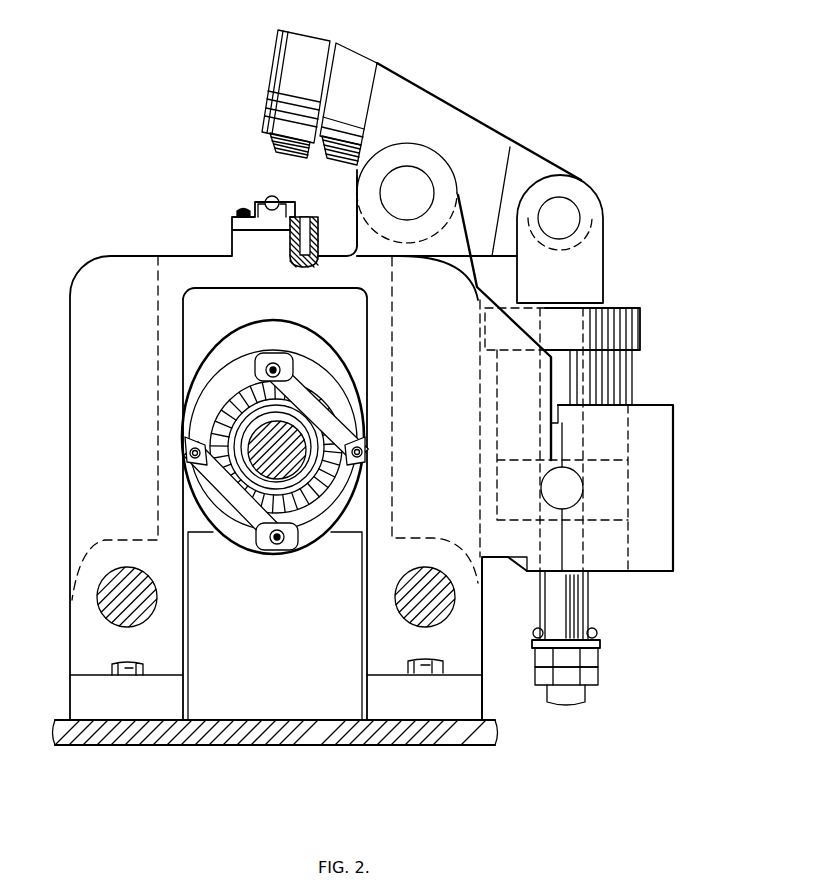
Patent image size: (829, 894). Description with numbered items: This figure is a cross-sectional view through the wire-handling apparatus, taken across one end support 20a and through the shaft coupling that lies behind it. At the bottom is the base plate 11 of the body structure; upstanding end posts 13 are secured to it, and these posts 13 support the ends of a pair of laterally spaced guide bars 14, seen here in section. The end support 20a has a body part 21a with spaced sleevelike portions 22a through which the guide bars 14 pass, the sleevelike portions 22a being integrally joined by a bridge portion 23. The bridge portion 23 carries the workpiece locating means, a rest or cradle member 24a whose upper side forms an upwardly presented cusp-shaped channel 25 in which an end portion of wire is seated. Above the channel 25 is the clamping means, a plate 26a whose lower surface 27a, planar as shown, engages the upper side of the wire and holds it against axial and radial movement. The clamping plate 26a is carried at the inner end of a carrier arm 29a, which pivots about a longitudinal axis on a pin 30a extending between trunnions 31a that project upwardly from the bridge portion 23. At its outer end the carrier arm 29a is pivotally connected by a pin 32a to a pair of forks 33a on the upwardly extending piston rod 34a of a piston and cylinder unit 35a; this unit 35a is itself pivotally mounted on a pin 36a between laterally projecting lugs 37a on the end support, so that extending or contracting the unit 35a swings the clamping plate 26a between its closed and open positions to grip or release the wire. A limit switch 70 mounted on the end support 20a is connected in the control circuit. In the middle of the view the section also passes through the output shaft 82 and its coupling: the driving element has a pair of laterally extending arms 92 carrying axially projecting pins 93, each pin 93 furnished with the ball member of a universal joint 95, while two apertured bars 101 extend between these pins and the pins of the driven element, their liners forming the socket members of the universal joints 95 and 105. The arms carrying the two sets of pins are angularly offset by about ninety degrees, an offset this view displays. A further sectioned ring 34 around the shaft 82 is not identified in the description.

The base plate 11 is at (278, 732).
The end posts 13 is at (173, 641).
The guide bars 14 is at (108, 573).
The end support 20a is at (185, 250).
The body part 21a is at (163, 267).
The sleevelike portions 22a is at (132, 548).
The bridge portion 23 is at (208, 275).
The rest or cradle member 24a is at (238, 210).
The cusp-shaped channel 25 is at (262, 190).
The clamping plate 26a is at (270, 68).
The lower surface 27a is at (300, 160).
The carrier arm 29a is at (407, 93).
The pin 30a is at (415, 178).
The trunnions 31a is at (447, 185).
The pin 32a is at (568, 212).
The forks 33a is at (593, 262).
The piston rod 34a is at (563, 303).
The piston and cylinder unit 35a is at (632, 387).
The pin 36a is at (572, 497).
The lugs 37a is at (622, 560).
The limit switch 70 is at (347, 367).
The bearing 34 is at (330, 412).
The output shaft 82 is at (240, 398).
The arms 92 is at (207, 433).
The pins 93 is at (293, 357).
The universal joint 95 is at (178, 443).
The bars 101 is at (348, 425).
The universal joint 105 is at (275, 363).